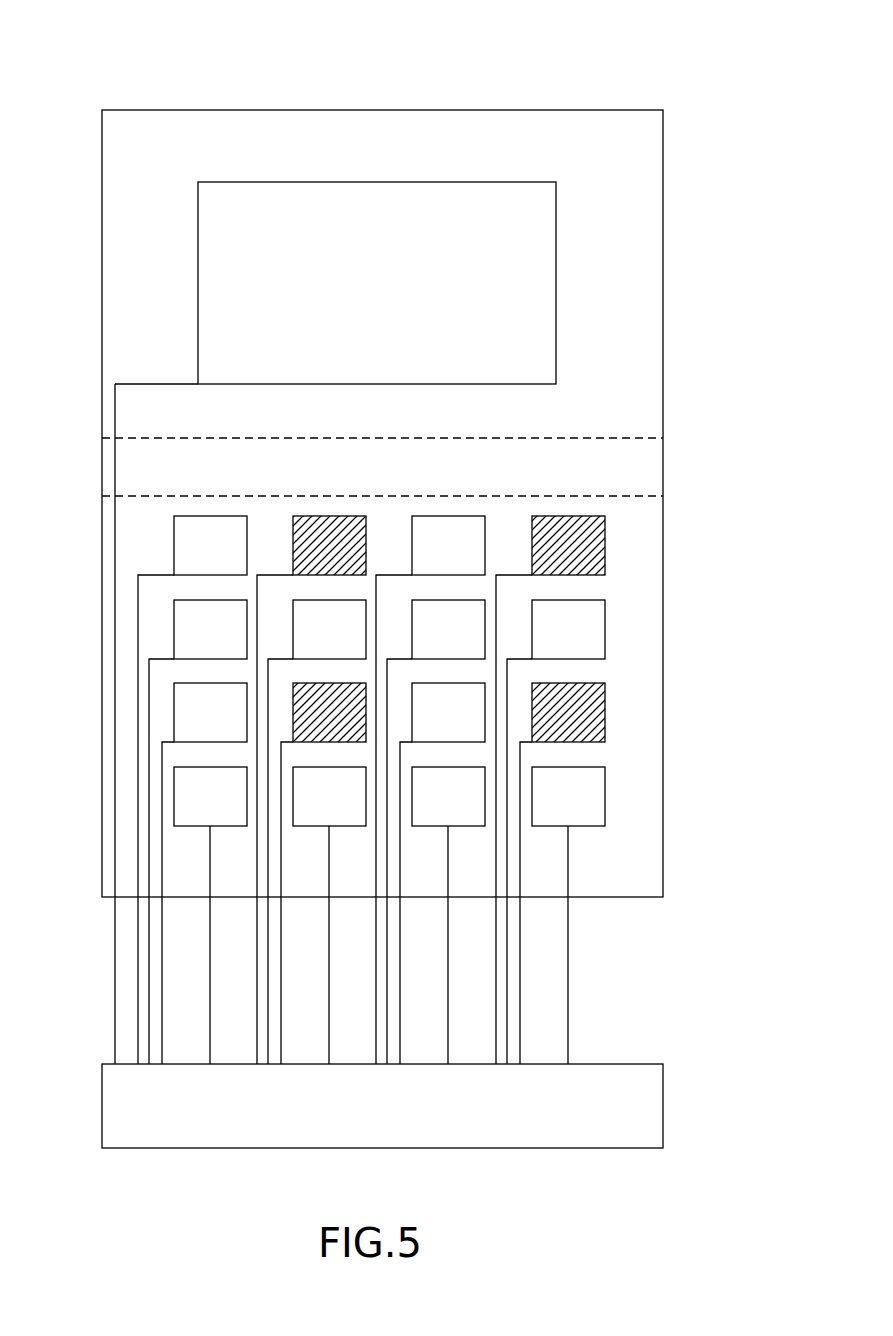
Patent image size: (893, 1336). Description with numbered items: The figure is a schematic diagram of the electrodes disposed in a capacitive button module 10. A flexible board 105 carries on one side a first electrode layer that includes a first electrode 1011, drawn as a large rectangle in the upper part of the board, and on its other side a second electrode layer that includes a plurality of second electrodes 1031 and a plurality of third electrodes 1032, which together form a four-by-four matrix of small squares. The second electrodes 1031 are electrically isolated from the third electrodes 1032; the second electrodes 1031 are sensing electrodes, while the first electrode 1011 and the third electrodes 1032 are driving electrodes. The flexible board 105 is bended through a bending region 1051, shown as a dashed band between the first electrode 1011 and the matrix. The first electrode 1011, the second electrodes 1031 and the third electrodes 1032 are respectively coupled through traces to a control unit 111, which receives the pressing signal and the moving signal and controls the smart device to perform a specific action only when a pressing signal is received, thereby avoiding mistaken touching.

The display device 10 is at (63, 41).
The flexible board 105 is at (130, 248).
The first electrode 1011 is at (527, 312).
The bending region 1051 is at (663, 462).
The second electrodes 1031 is at (573, 712).
The third electrodes 1032 is at (572, 792).
The control unit 111 is at (102, 1105).